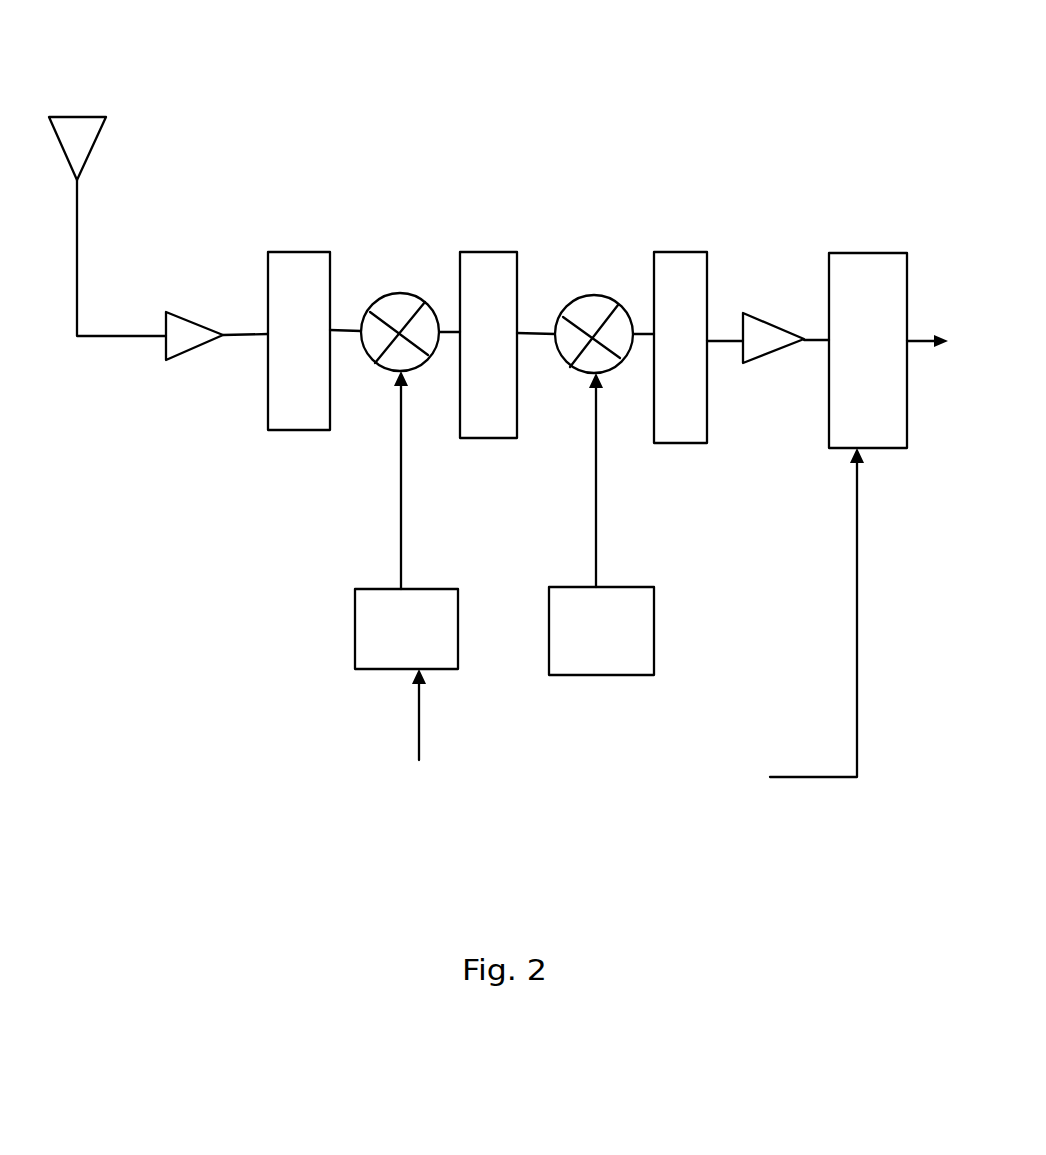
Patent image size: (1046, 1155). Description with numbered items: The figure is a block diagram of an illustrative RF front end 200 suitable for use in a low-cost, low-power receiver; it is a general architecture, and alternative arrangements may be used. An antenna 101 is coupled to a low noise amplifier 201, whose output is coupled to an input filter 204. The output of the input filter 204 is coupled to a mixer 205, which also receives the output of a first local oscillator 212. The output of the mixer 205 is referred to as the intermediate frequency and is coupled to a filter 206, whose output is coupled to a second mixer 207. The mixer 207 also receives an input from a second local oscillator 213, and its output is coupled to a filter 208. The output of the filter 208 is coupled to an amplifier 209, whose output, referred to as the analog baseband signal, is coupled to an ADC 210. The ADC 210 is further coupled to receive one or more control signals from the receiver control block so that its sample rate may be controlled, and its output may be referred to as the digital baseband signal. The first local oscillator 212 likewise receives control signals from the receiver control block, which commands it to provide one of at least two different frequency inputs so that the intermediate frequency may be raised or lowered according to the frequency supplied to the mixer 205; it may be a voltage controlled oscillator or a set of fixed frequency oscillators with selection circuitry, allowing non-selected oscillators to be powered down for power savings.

The antenna 101 is at (90, 155).
The RF front end 200 is at (450, 97).
The low noise amplifier 201 is at (190, 357).
The input filter 204 is at (297, 252).
The mixer 205 is at (382, 293).
The filter 206 is at (488, 252).
The mixer 207 is at (593, 295).
The filter 208 is at (682, 252).
The amplifier 209 is at (762, 358).
The ADC 210 is at (857, 252).
The first local oscillator 212 is at (355, 603).
The second local oscillator 213 is at (655, 658).